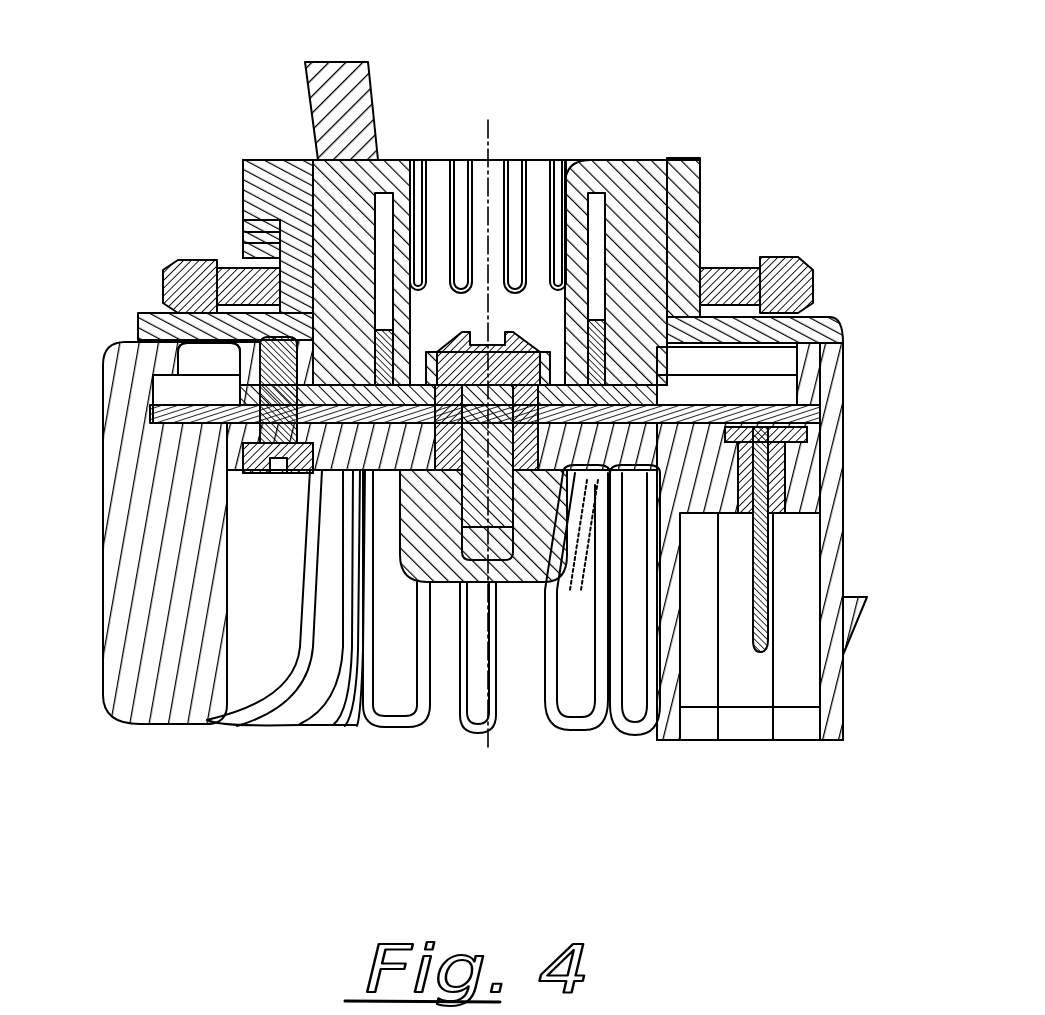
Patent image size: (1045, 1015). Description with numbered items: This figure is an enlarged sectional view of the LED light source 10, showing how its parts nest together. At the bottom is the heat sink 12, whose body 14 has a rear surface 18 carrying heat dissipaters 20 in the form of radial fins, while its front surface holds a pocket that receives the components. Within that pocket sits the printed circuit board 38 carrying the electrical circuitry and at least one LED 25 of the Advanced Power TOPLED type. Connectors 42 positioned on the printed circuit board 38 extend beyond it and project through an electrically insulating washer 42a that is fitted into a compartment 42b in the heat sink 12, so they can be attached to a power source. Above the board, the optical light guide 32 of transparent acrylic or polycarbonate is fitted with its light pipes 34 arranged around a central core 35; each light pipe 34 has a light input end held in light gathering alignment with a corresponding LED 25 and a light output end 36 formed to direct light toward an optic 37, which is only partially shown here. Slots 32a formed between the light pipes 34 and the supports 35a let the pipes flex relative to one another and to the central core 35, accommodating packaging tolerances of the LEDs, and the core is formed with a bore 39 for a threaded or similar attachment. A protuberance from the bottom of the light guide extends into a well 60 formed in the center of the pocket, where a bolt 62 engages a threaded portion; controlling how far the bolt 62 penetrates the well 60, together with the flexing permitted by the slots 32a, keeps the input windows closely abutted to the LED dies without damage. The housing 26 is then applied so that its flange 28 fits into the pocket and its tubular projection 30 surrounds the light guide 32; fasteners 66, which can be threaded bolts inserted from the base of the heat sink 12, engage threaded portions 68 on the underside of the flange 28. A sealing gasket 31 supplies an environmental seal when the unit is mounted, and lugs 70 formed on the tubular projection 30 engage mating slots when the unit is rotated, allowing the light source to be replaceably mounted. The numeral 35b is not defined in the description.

The LED light source 10 is at (823, 145).
The heat sink 12 is at (865, 447).
The body 14 is at (845, 415).
The rear surface 18 is at (235, 755).
The heat dissipaters 20 is at (115, 605).
The LED 25 is at (657, 392).
The housing 26 is at (212, 197).
The flange 28 is at (820, 317).
The tubular projection 30 is at (700, 185).
The sealing gasket 31 is at (210, 275).
The optical light guide 32 is at (660, 233).
The slots 32a is at (520, 170).
The light pipe 34 is at (760, 265).
The central core 35 is at (576, 601).
The supports 35a is at (477, 160).
The outer contact finger 35b is at (575, 263).
The light output end 36 is at (478, 108).
The optic 37 is at (370, 70).
The printed circuit board 38 is at (825, 400).
The bore 39 is at (505, 452).
The connectors 42 is at (770, 585).
The electrically insulating washer 42a is at (785, 470).
The compartment 42b is at (783, 498).
The well 60 is at (445, 555).
The bolt 62 is at (472, 333).
The fasteners 66 is at (253, 430).
The threaded portions 68 is at (153, 392).
The lugs 70 is at (250, 160).